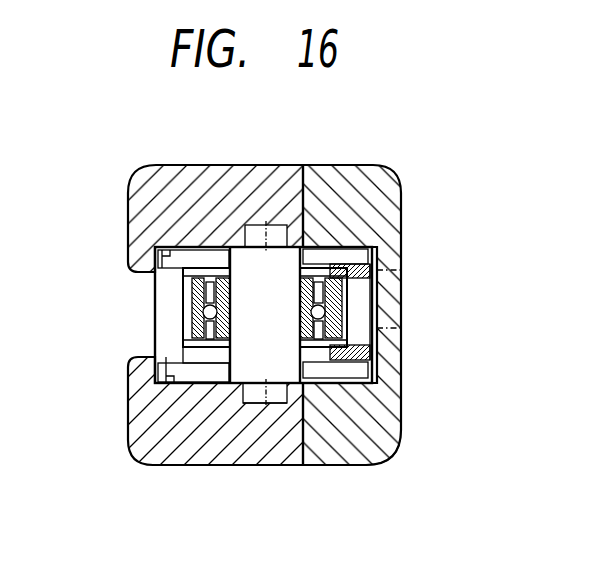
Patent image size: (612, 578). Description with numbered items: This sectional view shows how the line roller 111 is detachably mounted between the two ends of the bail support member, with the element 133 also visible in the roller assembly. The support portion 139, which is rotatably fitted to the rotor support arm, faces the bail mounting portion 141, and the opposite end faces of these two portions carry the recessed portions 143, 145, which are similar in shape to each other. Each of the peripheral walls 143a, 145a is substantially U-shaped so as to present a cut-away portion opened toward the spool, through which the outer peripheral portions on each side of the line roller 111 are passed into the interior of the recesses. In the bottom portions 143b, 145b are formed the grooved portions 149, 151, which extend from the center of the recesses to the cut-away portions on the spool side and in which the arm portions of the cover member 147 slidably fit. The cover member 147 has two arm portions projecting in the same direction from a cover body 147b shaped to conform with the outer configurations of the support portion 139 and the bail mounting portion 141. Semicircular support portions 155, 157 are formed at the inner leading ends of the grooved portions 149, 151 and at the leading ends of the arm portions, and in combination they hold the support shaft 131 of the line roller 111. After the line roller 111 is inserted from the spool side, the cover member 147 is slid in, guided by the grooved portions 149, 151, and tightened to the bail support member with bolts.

The line roller 111 is at (182, 303).
The support shaft 131 is at (220, 445).
The ball 133 is at (379, 304).
The support portion 139 is at (265, 406).
The bail mounting portion 141 is at (140, 197).
The recessed portion 143 is at (360, 391).
The peripheral wall 143a is at (165, 388).
The bottom portion 143b is at (200, 384).
The recessed portion 145 is at (373, 230).
The peripheral wall 145a is at (186, 250).
The bottom portion 145b is at (220, 246).
The cover member 147 is at (404, 387).
The cover body 147b is at (406, 442).
The grooved portion 149 is at (330, 440).
The grooved portion 151 is at (368, 238).
The support portion 155 is at (265, 358).
The support portion 157 is at (283, 226).